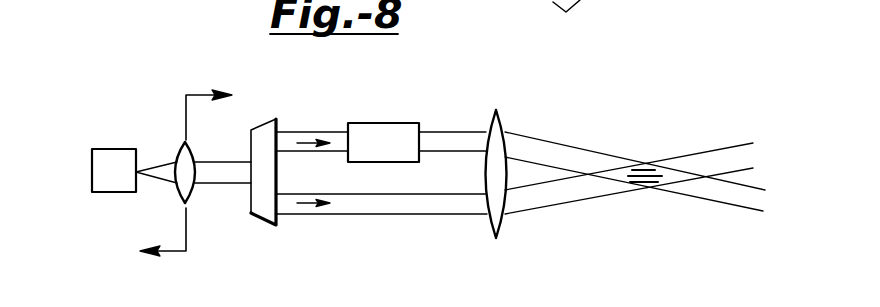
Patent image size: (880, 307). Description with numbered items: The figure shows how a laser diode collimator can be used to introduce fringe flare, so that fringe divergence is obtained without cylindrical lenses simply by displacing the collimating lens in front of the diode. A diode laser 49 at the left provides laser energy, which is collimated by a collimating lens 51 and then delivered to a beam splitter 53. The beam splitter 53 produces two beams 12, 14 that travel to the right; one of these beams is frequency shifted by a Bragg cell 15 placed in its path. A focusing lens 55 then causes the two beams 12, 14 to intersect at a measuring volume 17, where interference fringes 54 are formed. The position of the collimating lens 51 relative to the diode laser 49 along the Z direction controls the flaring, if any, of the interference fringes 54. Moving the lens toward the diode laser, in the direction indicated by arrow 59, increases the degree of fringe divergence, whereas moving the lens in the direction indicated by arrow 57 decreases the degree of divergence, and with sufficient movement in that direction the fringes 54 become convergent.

The diode laser 49 is at (110, 149).
The collimating lens 51 is at (191, 196).
The arrow 57 is at (204, 94).
The arrow 59 is at (177, 251).
The beam splitter 53 is at (262, 127).
The beam 12 is at (342, 132).
The beam 14 is at (350, 215).
The Bragg cell 15 is at (393, 123).
The focusing lens 55 is at (500, 118).
The measuring volume 17 is at (683, 177).
The interference fringes 54 is at (647, 188).